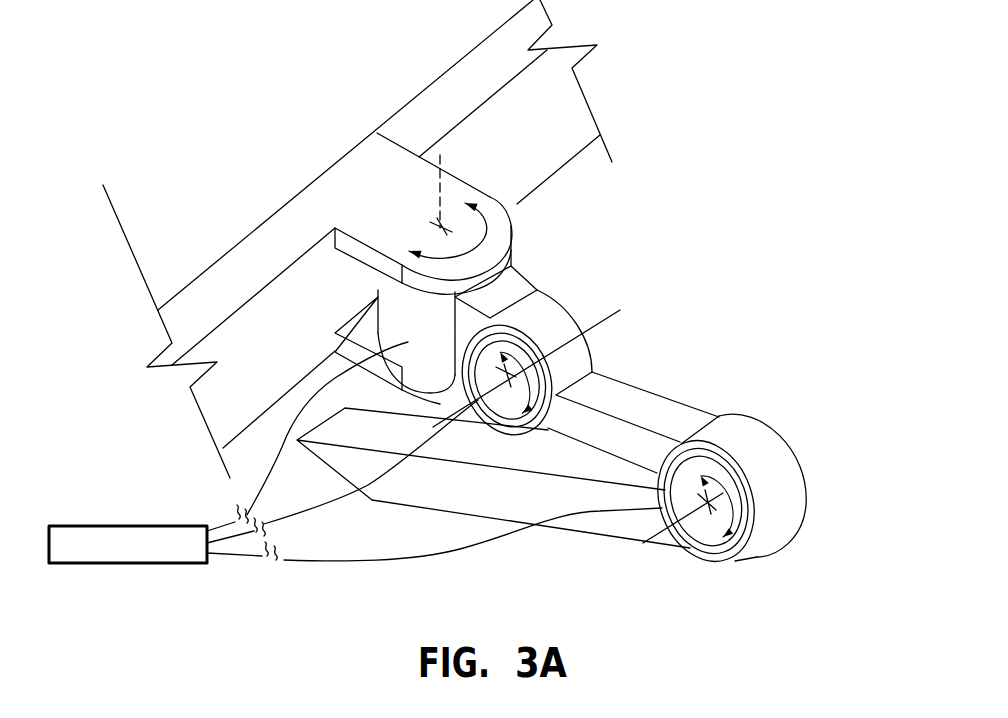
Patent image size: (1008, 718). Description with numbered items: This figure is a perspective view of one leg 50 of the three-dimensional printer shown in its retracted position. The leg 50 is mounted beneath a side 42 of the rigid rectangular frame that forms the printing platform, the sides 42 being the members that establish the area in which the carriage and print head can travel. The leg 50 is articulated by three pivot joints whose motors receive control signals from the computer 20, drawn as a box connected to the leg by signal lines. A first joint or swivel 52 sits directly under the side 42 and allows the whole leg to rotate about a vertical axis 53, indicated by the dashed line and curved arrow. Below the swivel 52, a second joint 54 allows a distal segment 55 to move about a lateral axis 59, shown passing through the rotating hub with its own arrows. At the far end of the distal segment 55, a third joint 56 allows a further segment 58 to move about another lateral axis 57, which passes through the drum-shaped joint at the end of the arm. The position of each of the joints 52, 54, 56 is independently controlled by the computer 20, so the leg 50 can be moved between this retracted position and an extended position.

The computer 20 is at (82, 526).
The side 42 is at (350, 151).
The leg 50 is at (730, 240).
The first joint or swivel 52 is at (498, 221).
The vertical axis 53 is at (440, 161).
The second joint 54 is at (557, 313).
The distal segment 55 is at (645, 400).
The third joint 56 is at (772, 433).
The lateral axis 57 is at (788, 453).
The further segment 58 is at (615, 527).
The lateral axis 59 is at (619, 311).